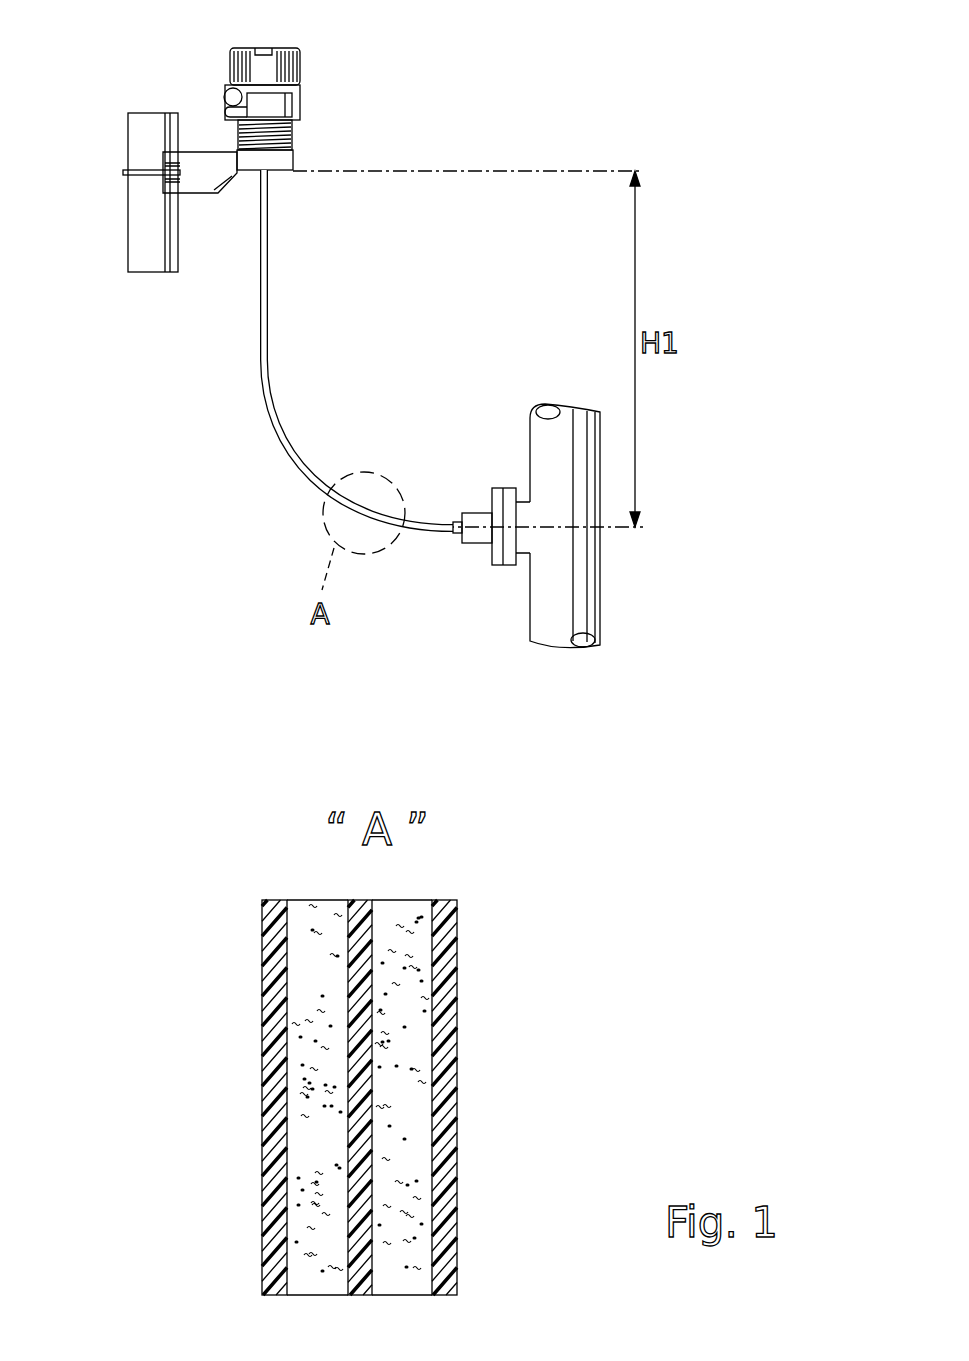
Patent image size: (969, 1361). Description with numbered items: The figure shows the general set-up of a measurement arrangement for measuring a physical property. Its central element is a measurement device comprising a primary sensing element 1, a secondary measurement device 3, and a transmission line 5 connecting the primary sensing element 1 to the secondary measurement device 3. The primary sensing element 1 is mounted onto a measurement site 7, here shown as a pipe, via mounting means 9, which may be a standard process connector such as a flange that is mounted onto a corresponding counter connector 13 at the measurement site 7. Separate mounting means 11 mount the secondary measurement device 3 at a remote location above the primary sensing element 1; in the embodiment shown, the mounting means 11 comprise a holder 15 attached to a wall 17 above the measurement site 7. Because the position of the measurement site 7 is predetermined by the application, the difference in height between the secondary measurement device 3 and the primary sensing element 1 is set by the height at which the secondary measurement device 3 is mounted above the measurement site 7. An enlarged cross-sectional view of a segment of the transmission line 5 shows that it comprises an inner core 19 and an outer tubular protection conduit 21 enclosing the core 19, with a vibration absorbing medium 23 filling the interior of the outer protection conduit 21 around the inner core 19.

The primary sensing element 1 is at (468, 496).
The secondary measurement device 3 is at (300, 105).
The transmission line 5 is at (267, 272).
The measurement site 7 is at (582, 592).
The mounting means 9 is at (492, 552).
The mounting means 11 is at (128, 92).
The counter connector 13 is at (510, 567).
The holder 15 is at (135, 235).
The wall 17 is at (202, 183).
The inner core 19 is at (350, 1118).
The outer tubular protection conduit 21 is at (267, 1175).
The vibration absorbing medium 23 is at (313, 1030).